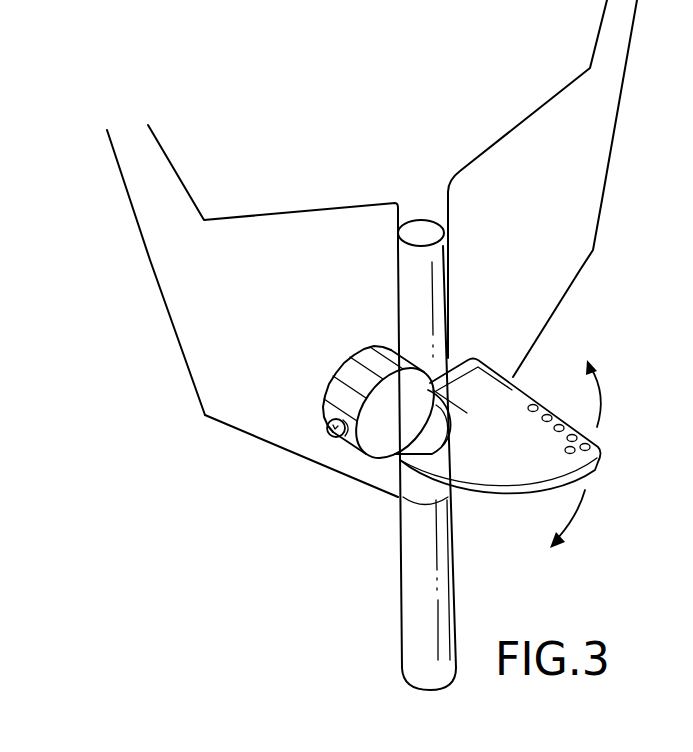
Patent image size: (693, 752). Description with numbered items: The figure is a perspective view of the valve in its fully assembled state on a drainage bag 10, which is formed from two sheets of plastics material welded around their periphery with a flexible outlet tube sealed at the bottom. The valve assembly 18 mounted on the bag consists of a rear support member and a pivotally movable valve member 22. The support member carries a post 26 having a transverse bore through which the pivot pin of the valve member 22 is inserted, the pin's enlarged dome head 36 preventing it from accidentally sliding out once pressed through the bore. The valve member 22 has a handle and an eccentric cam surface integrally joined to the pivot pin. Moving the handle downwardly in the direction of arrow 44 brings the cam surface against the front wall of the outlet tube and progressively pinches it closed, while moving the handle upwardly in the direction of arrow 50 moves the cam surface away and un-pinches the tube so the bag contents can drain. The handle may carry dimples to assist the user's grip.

The drainage bag 10 is at (140, 292).
The valve assembly 18 is at (260, 478).
The valve member 22 is at (498, 484).
The post 26 is at (358, 373).
The dome head 36 is at (333, 437).
The arrow 44 is at (577, 522).
The arrow 50 is at (600, 400).